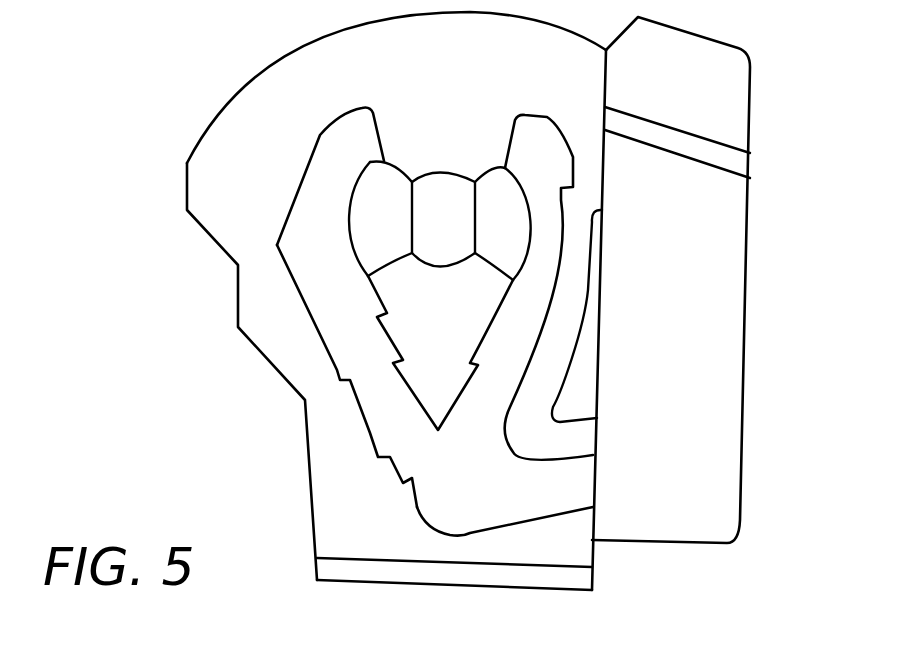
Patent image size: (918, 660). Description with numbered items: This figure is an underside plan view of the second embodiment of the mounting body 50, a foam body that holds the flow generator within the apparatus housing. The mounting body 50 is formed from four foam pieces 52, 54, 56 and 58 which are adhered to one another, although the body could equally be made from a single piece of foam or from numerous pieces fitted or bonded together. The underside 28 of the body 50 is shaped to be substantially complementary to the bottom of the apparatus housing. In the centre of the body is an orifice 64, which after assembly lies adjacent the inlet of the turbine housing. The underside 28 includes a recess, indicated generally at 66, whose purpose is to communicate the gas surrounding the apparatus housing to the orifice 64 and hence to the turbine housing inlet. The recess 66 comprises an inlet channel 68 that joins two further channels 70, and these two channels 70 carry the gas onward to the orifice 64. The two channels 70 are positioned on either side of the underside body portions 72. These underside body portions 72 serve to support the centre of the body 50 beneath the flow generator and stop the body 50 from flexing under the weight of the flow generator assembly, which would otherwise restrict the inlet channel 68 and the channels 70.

The underside 28 is at (358, 82).
The mounting body 50 is at (158, 393).
The foam piece 52 is at (373, 33).
The foam piece 54 is at (732, 337).
The foam piece 56 is at (327, 525).
The foam piece 58 is at (438, 577).
The orifice 64 is at (428, 221).
The recess 66 is at (367, 433).
The inlet channel 68 is at (550, 500).
The channels 70 is at (317, 275).
The underside body portions 72 is at (458, 150).